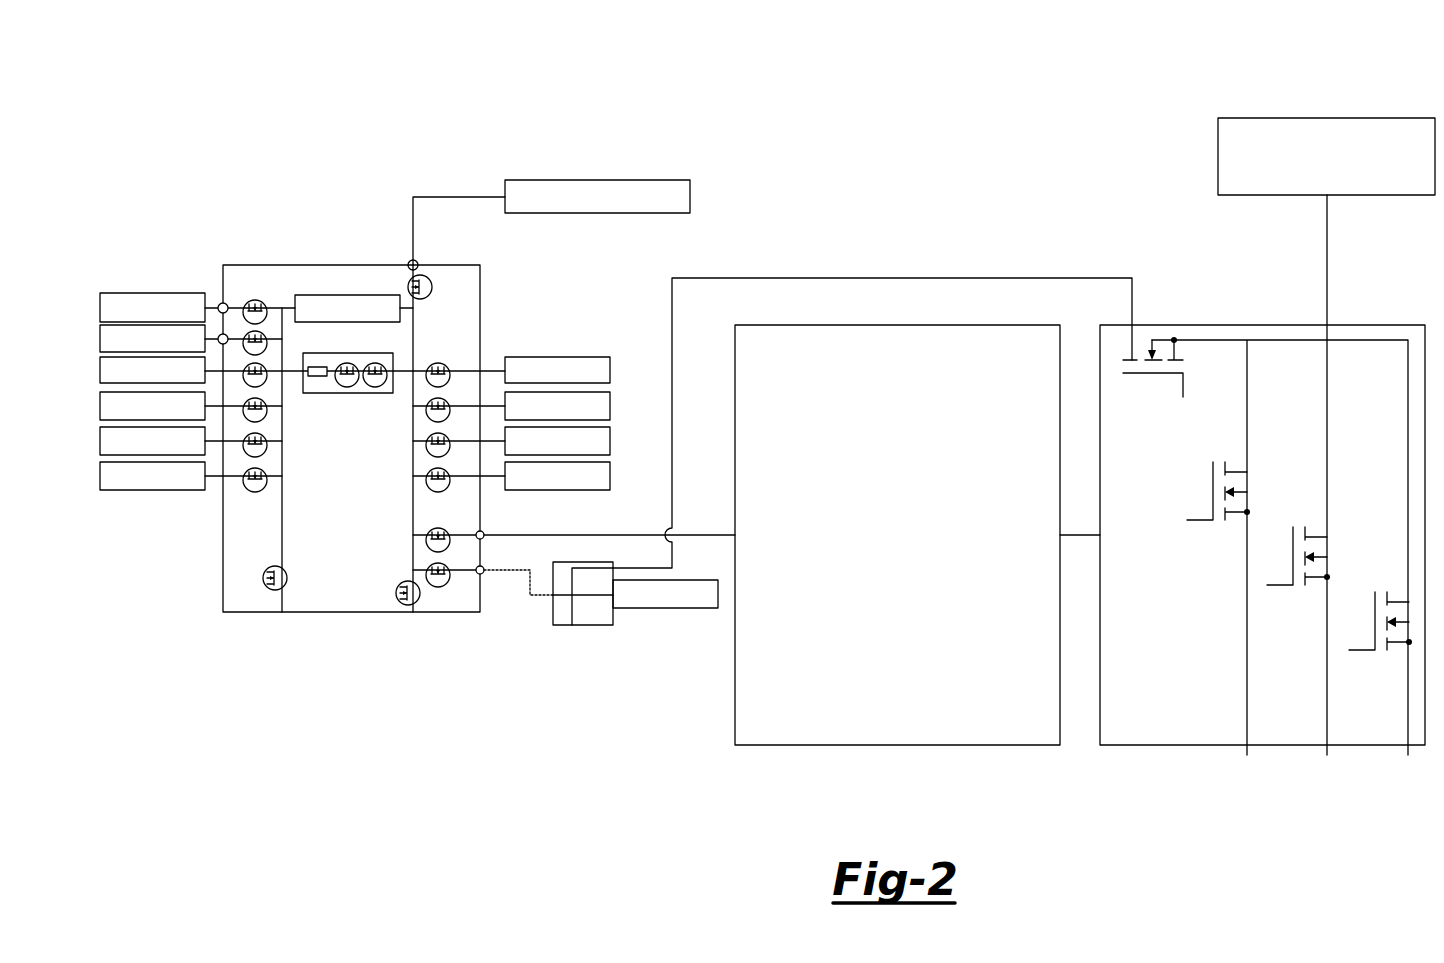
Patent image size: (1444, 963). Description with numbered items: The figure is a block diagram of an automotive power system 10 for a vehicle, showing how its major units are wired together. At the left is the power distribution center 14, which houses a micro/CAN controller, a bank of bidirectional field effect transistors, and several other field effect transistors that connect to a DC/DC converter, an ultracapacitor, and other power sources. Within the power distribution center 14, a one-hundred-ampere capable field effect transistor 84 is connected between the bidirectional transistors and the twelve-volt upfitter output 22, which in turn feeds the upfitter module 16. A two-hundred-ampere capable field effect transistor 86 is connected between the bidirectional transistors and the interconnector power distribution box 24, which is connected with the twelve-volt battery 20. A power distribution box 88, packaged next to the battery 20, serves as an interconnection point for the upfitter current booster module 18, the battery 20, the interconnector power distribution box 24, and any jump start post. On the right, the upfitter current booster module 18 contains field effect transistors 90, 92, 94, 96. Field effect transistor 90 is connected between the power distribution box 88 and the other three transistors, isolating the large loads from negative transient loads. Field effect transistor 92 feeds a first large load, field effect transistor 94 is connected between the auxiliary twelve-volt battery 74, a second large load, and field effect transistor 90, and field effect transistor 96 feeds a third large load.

The automotive power system 10 is at (218, 98).
The power distribution center 14 is at (348, 265).
The upfitter module 16 is at (900, 748).
The upfitter current booster module 18 is at (1170, 748).
The 12V battery 20 is at (665, 610).
The 12V upfitter output 22 is at (484, 532).
The interconnector power distribution box 24 is at (484, 574).
The auxiliary 12V battery 74 is at (1218, 158).
The 100 A capable field effect transistor 84 is at (430, 530).
The 200 A capable field effect transistor 86 is at (438, 588).
The power distribution box 88 is at (583, 627).
The field effect transistor 90 is at (1155, 375).
The field effect transistor 92 is at (1213, 492).
The field effect transistor 94 is at (1293, 557).
The field effect transistor 96 is at (1375, 622).